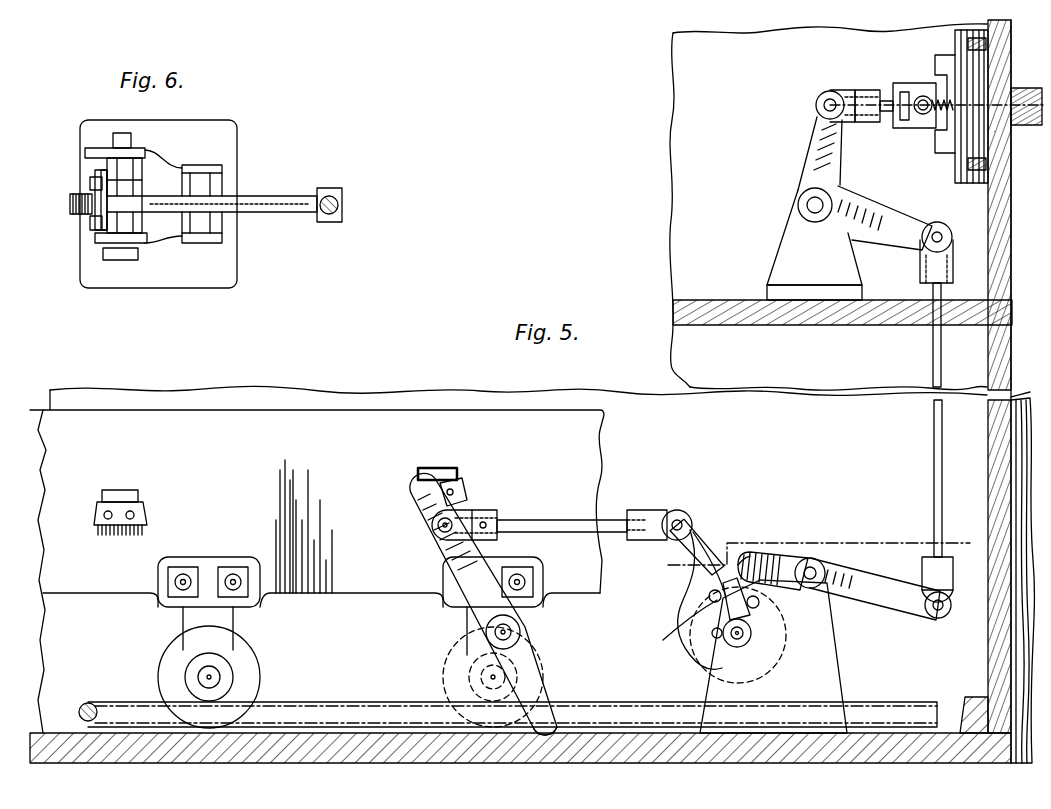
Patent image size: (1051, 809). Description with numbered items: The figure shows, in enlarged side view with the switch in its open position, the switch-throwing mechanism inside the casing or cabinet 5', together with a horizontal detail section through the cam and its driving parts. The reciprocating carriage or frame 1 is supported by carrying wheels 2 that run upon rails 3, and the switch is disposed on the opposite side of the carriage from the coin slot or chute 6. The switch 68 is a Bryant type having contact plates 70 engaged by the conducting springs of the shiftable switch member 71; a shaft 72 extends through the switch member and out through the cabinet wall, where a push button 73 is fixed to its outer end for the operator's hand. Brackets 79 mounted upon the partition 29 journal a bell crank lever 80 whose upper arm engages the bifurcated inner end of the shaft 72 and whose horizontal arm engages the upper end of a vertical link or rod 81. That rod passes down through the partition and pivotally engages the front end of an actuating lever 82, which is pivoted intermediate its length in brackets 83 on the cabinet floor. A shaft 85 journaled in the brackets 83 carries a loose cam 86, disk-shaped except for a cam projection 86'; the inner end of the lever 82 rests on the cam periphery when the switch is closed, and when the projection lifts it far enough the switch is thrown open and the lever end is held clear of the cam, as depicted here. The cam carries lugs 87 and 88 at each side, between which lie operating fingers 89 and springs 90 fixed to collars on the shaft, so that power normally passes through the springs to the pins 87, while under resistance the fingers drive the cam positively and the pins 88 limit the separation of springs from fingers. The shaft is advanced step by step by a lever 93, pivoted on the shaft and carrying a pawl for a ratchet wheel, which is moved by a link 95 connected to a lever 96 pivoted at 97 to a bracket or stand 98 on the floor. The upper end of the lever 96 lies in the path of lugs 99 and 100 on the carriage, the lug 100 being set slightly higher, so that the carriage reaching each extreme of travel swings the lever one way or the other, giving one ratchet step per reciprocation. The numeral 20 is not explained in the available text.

In FIG. 5, the carriage or frame 1 is at (600, 455).
In FIG. 5, the carrying wheels 2 is at (178, 662).
In FIG. 5, the rails 3 is at (336, 712).
In FIG. 5, the casing or cabinet 5' is at (1026, 395).
In FIG. 5, the coin slot or chute 6 is at (816, 550).
In FIG. 5, the pin 20 is at (892, 118).
In FIG. 5, the partition 29 is at (706, 312).
In FIG. 5, the switch 68 is at (965, 47).
In FIG. 5, the contact plates 70 is at (938, 128).
In FIG. 5, the shiftable switch member 71 is at (925, 96).
In FIG. 5, the shaft 72 is at (879, 100).
In FIG. 5, the push button 73 is at (1023, 90).
In FIG. 5, the brackets 79 is at (800, 240).
In FIG. 5, the bell crank lever 80 is at (815, 154).
In FIG. 5, the link or rod 81 is at (941, 358).
In FIG. 6, the link or rod 81 is at (342, 205).
In FIG. 5, the actuating lever 82 is at (880, 600).
In FIG. 6, the actuating lever 82 is at (272, 200).
In FIG. 5, the brackets 83 is at (840, 686).
In FIG. 6, the brackets 83 is at (216, 178).
In FIG. 5, the shaft 85 is at (755, 634).
In FIG. 6, the shaft 85 is at (130, 141).
In FIG. 5, the cam 86 is at (689, 610).
In FIG. 6, the cam 86 is at (63, 205).
In FIG. 5, the cam projection 86' is at (766, 509).
In FIG. 5, the lugs or pins 87 is at (708, 598).
In FIG. 6, the lugs or pins 87 is at (90, 184).
In FIG. 5, the lugs or pins 88 is at (754, 598).
In FIG. 6, the lugs or pins 88 is at (150, 186).
In FIG. 5, the operating fingers 89 is at (724, 610).
In FIG. 5, the springs 90 is at (726, 572).
In FIG. 6, the springs 90 is at (102, 235).
In FIG. 5, the lever 93 is at (698, 537).
In FIG. 5, the link 95 is at (553, 520).
In FIG. 5, the lever 96 is at (445, 555).
In FIG. 5, the pivot 97 is at (512, 630).
In FIG. 5, the bracket or stand 98 is at (530, 697).
In FIG. 5, the lug 99 is at (119, 492).
In FIG. 5, the lug 100 is at (440, 461).